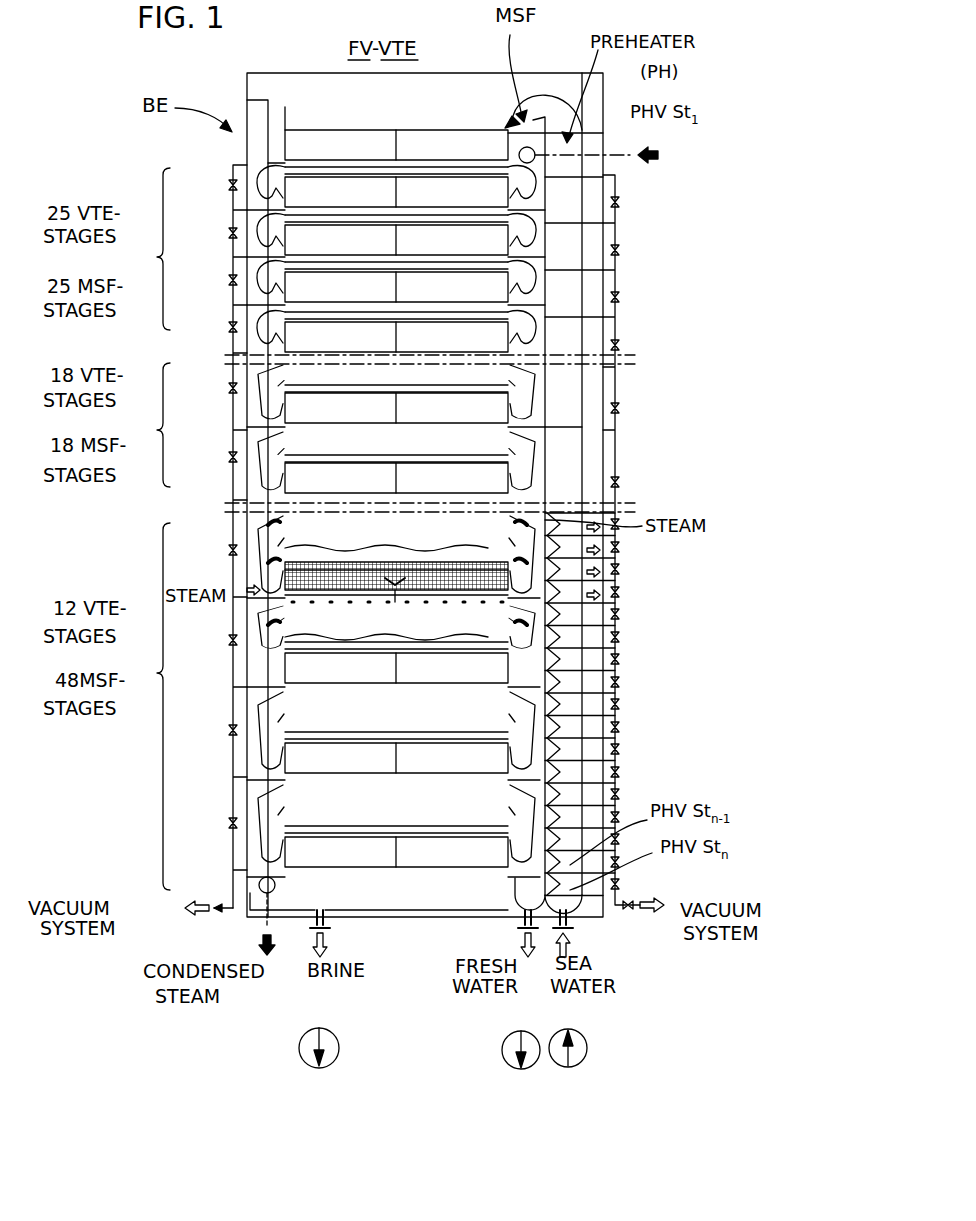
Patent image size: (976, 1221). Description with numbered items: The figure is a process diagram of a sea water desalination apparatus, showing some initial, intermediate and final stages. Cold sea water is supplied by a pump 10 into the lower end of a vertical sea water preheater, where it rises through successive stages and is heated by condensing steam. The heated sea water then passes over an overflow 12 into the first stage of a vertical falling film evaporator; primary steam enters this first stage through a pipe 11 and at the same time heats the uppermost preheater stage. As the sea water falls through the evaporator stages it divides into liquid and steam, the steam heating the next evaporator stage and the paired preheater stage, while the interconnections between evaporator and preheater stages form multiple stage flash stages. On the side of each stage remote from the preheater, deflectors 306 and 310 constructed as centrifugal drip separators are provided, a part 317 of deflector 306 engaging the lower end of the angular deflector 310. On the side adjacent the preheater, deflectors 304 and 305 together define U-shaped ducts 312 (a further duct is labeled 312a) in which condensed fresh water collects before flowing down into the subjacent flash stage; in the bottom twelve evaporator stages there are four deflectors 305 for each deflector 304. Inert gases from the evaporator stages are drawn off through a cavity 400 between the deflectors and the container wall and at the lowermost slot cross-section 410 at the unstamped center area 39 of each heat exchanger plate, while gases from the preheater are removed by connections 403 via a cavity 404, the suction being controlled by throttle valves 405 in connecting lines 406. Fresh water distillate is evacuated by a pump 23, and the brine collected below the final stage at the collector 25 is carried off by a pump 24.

The pump 10 is at (583, 1062).
The pipe 11 is at (618, 160).
The overflow 12 is at (445, 130).
The pump 23 is at (505, 1065).
The pump 24 is at (330, 1063).
The collector 25 is at (375, 920).
The unstamped area 39 is at (395, 600).
The deflectors 304 is at (540, 213).
The deflectors 305 is at (545, 405).
The deflectors 306 is at (250, 242).
The deflectors 310 is at (250, 292).
The U-shaped ducts 312 is at (545, 232).
The tube connection line 312a is at (540, 303).
The part of the deflector 317 is at (250, 395).
The cavity 400 is at (248, 548).
The connections 403 is at (620, 905).
The cavity 404 is at (595, 773).
The throttle valves 405 is at (620, 248).
The connecting lines 406 is at (618, 280).
The lowermost slot cross-section 410 is at (396, 597).